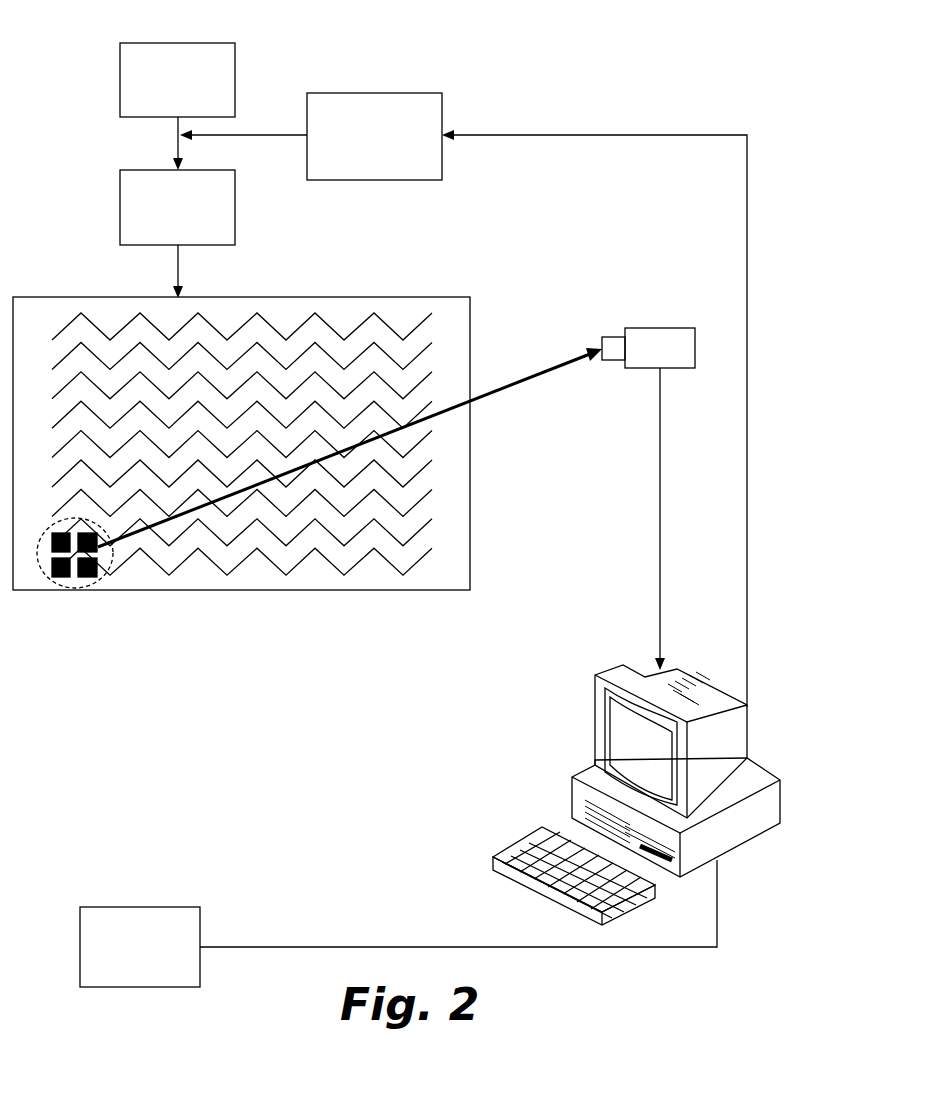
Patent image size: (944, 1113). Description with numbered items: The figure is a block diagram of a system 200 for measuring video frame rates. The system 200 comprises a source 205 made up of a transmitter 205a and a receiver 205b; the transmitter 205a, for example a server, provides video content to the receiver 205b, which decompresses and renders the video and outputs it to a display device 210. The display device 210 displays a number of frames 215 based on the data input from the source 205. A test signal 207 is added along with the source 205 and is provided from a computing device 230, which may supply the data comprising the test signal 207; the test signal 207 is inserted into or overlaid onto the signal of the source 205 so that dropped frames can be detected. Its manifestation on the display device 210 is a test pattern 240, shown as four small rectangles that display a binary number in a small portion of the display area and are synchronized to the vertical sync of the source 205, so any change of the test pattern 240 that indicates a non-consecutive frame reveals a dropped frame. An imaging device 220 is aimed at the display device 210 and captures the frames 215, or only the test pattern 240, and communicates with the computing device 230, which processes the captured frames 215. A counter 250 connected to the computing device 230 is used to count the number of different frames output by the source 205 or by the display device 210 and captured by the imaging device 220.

The system 200 is at (542, 50).
The source 205 is at (110, 43).
The transmitter 205a is at (177, 80).
The receiver 205b is at (177, 207).
The test signal 207 is at (463, 400).
The display device 210 is at (447, 590).
The frames 215 is at (370, 590).
The imaging device 220 is at (662, 345).
The computing device 230 is at (623, 737).
The test pattern 240 is at (77, 592).
The counter 250 is at (398, 923).